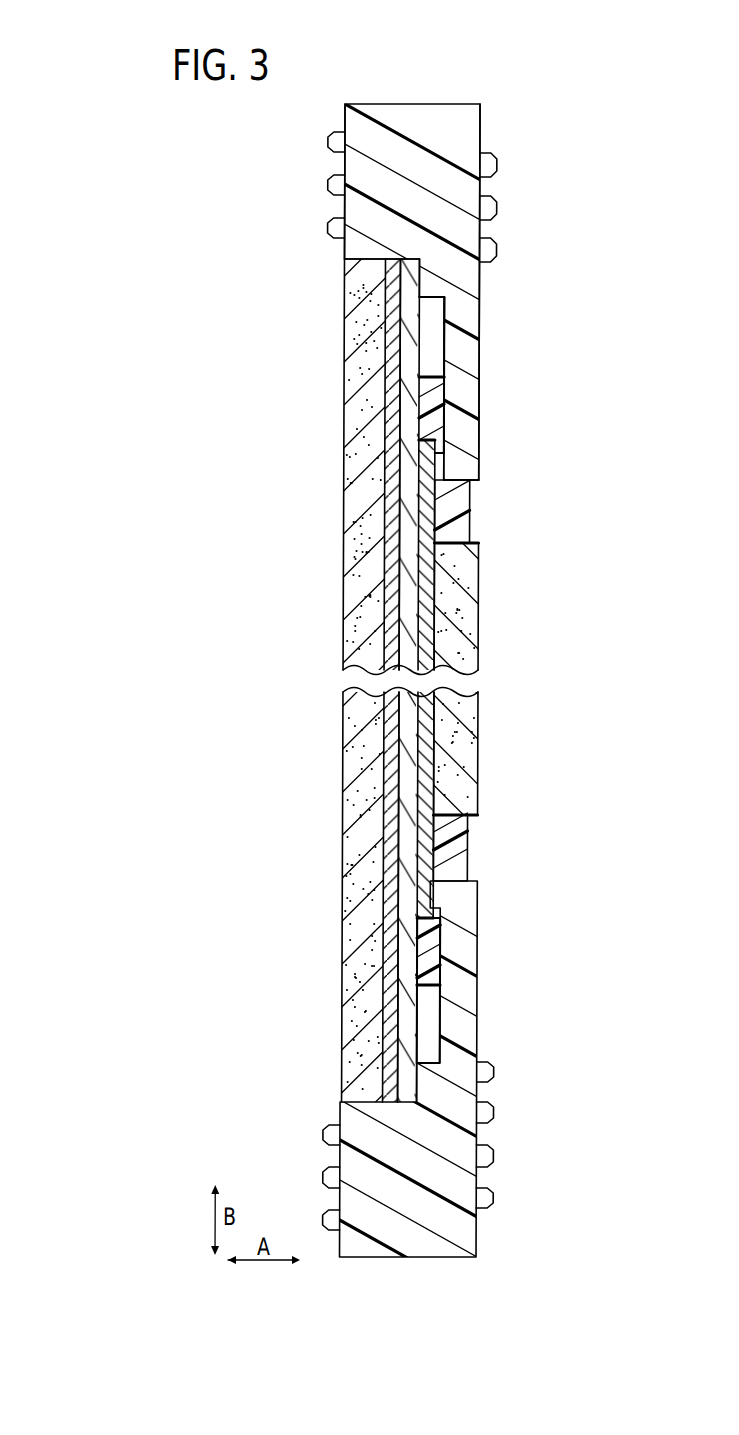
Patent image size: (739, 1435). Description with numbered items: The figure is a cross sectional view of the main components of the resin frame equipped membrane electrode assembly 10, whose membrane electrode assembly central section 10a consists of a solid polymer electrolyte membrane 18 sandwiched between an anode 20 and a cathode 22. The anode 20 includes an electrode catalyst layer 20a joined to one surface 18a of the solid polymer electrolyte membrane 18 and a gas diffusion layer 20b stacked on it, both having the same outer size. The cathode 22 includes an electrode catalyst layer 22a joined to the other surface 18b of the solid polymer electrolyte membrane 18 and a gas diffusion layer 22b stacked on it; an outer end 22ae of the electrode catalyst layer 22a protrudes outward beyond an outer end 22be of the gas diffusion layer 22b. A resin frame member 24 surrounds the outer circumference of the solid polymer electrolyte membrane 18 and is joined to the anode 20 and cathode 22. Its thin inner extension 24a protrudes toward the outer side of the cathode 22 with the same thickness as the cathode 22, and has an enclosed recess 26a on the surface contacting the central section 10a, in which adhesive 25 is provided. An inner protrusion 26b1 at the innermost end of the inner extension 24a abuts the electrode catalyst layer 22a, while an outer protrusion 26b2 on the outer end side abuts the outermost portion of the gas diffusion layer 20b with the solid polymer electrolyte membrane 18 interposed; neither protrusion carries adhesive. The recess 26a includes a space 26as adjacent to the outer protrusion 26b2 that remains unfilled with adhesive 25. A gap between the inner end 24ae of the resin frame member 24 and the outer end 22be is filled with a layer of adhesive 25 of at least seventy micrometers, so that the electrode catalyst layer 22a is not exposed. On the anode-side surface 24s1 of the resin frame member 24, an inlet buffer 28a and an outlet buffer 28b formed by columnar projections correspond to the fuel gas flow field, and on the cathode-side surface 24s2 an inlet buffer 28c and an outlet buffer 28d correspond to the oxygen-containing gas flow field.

The resin frame equipped membrane electrode assembly 10 is at (314, 110).
The membrane electrode assembly central section 10a is at (339, 557).
The solid polymer electrolyte membrane 18 is at (400, 680).
The one surface of the solid polymer electrolyte membrane 18a is at (402, 980).
The other surface of the solid polymer electrolyte membrane 18b is at (424, 1023).
The anode 20 is at (281, 685).
The electrode catalyst layer 20a is at (389, 737).
The gas diffusion layer 20b is at (365, 780).
The cathode 22 is at (451, 659).
The electrode catalyst layer 22a is at (404, 659).
The gas diffusion layer 22b is at (504, 672).
The outer end of the electrode catalyst layer 22ae is at (428, 446).
The outer end of the gas diffusion layer 22be is at (472, 543).
The resin frame member 24 is at (417, 286).
The inner extension 24a is at (471, 350).
The inner end of the resin frame member 24ae is at (470, 484).
The surface of the resin frame member 24s1 is at (344, 246).
The surface of the resin frame member 24s2 is at (483, 130).
The adhesive 25 is at (434, 390).
The recess 26a is at (414, 371).
The space 26as is at (436, 312).
The inner protrusion 26b1 is at (441, 463).
The outer protrusion 26b2 is at (434, 291).
The inlet buffer 28a is at (329, 183).
The outlet buffer 28b is at (327, 1138).
The inlet buffer 28c is at (497, 207).
The outlet buffer 28d is at (498, 1197).